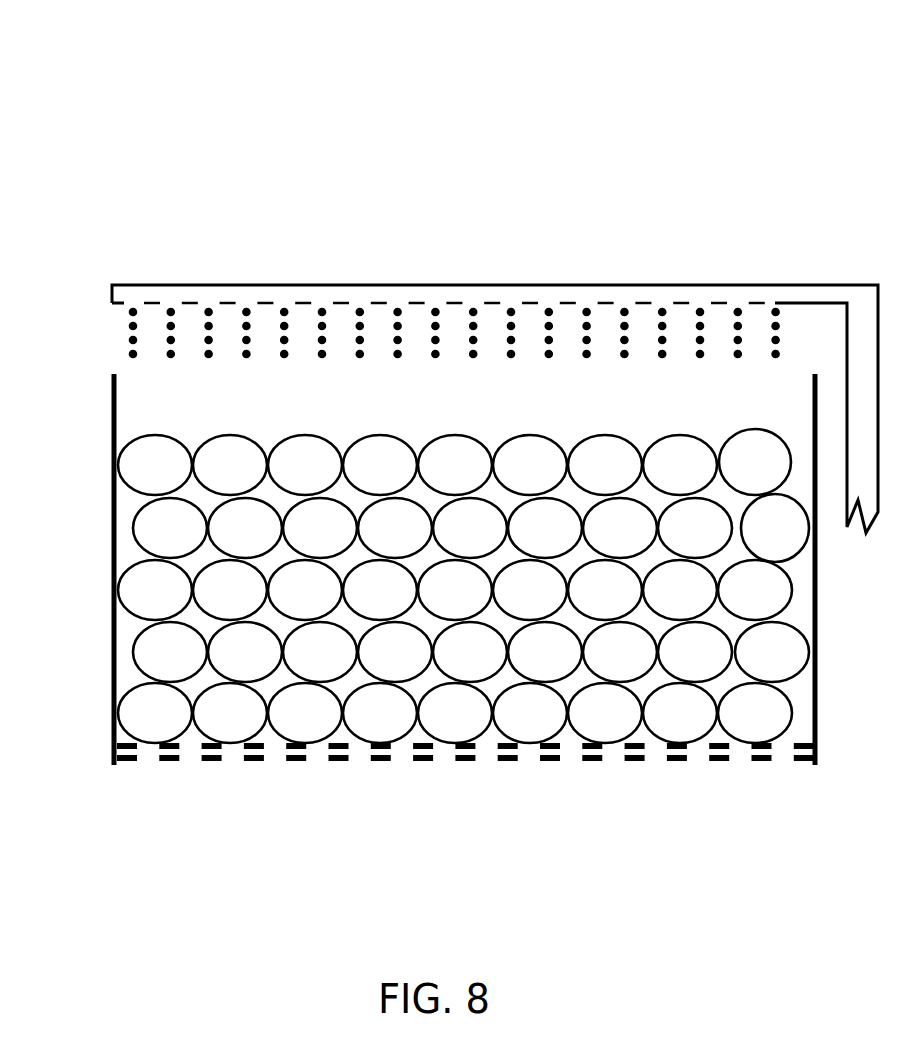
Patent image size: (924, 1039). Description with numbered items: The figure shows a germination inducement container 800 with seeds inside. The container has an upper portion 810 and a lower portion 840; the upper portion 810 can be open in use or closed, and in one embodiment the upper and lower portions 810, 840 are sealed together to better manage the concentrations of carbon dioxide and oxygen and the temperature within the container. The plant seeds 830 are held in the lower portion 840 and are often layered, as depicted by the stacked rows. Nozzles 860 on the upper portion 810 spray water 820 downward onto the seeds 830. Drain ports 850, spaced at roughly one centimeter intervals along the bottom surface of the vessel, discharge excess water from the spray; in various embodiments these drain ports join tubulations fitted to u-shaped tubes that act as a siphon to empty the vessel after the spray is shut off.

The germination inducement container 800 is at (648, 165).
The upper portion 810 is at (152, 286).
The nozzles 860 is at (133, 302).
The water 820 is at (662, 369).
The plant seeds 830 is at (317, 437).
The lower portion 840 is at (112, 632).
The drain ports 850 is at (313, 760).